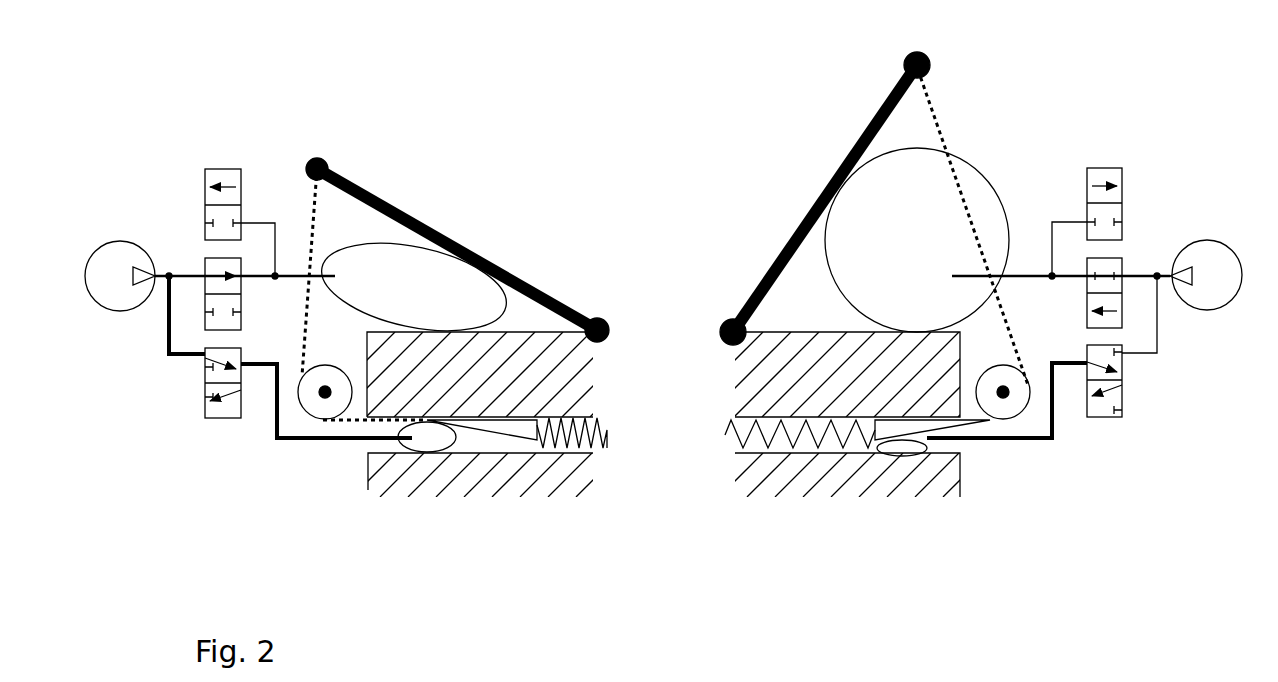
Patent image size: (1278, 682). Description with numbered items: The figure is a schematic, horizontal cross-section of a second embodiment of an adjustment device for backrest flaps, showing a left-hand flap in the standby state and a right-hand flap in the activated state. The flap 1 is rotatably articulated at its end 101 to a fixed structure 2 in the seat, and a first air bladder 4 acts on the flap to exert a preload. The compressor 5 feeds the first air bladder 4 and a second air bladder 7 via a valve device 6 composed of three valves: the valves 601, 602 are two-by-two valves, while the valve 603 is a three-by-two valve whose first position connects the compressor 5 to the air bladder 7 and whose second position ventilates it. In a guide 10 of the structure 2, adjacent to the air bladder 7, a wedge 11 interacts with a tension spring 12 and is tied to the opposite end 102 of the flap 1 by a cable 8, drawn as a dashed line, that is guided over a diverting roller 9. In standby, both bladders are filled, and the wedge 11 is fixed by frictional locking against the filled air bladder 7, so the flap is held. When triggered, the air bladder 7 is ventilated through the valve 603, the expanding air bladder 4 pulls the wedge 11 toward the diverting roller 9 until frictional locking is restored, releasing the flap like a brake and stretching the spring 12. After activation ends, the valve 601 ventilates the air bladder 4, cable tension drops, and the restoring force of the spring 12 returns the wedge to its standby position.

The flap 1 is at (388, 202).
The structure 2 is at (548, 490).
The first air bladder 4 is at (475, 282).
The compressed-air supply 5 is at (97, 250).
The valve device 6 is at (220, 148).
The second air bladder 7 is at (425, 450).
The cable 8 is at (303, 328).
The diverting roller 9 is at (313, 412).
The guide 10 is at (367, 445).
The wedge 11 is at (485, 428).
The tension spring 12 is at (600, 450).
The end of the flap 101 is at (598, 318).
The opposite end of the flap 102 is at (318, 157).
The valve 601 is at (205, 172).
The valve 602 is at (241, 305).
The valve 603 is at (205, 390).